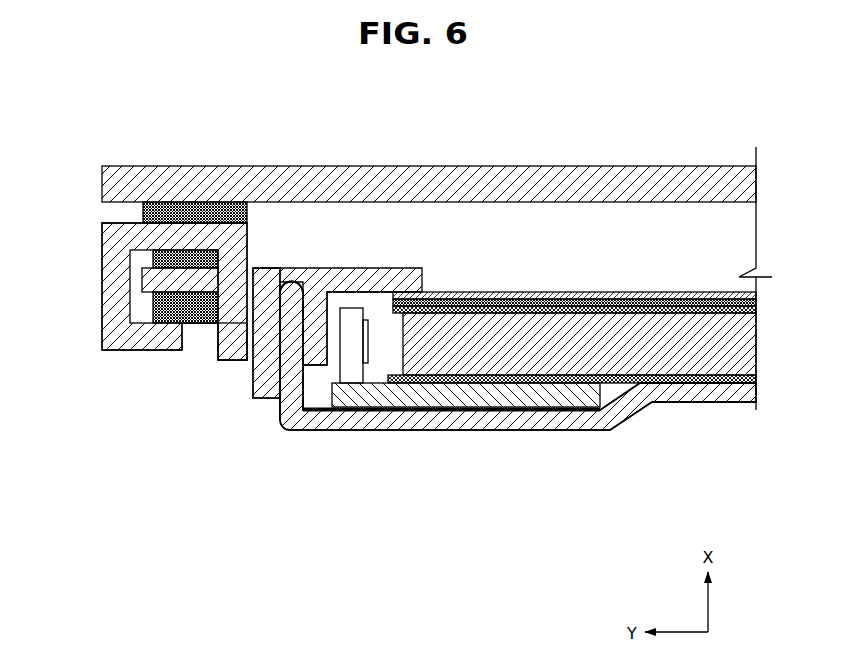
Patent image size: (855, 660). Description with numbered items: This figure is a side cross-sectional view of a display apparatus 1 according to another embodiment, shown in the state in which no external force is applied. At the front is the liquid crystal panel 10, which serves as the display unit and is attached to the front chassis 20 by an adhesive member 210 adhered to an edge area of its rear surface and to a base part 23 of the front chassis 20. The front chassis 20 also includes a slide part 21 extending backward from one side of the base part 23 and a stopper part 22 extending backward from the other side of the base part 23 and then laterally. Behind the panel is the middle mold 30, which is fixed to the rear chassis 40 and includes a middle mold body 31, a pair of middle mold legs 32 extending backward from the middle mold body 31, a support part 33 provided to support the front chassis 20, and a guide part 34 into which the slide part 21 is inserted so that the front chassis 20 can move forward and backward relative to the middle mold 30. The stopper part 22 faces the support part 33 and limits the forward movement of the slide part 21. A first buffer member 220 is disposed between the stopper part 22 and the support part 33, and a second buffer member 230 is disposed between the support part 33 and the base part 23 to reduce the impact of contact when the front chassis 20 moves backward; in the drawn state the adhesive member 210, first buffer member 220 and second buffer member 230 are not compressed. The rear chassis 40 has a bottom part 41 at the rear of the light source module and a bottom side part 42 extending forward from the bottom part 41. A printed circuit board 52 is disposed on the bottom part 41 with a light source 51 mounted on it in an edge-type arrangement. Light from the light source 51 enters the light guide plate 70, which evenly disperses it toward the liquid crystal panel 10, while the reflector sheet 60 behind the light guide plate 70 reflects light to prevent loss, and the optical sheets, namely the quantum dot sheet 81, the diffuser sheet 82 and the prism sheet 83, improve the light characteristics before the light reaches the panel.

The display apparatus 1 is at (80, 118).
The liquid crystal panel 10 is at (447, 165).
The front chassis 20 is at (100, 291).
The slide part 21 is at (218, 351).
The stopper part 22 is at (136, 351).
The base part 23 is at (173, 228).
The support part 33 is at (193, 250).
The guide part 34 is at (254, 268).
The middle mold body 31 is at (323, 268).
The middle mold legs 32 is at (285, 409).
The middle mold 30 is at (432, 266).
The adhesive member 210 is at (142, 212).
The first buffer member 220 is at (152, 306).
The second buffer member 230 is at (152, 257).
The rear chassis 40 is at (675, 405).
The bottom part 41 is at (468, 418).
The bottom side part 42 is at (256, 380).
The light source 51 is at (350, 308).
The printed circuit board 52 is at (400, 402).
The reflector sheet 60 is at (758, 380).
The light guide plate 70 is at (758, 350).
The quantum dot sheet 81 is at (758, 309).
The diffuser sheet 82 is at (758, 302).
The prism sheet 83 is at (758, 295).